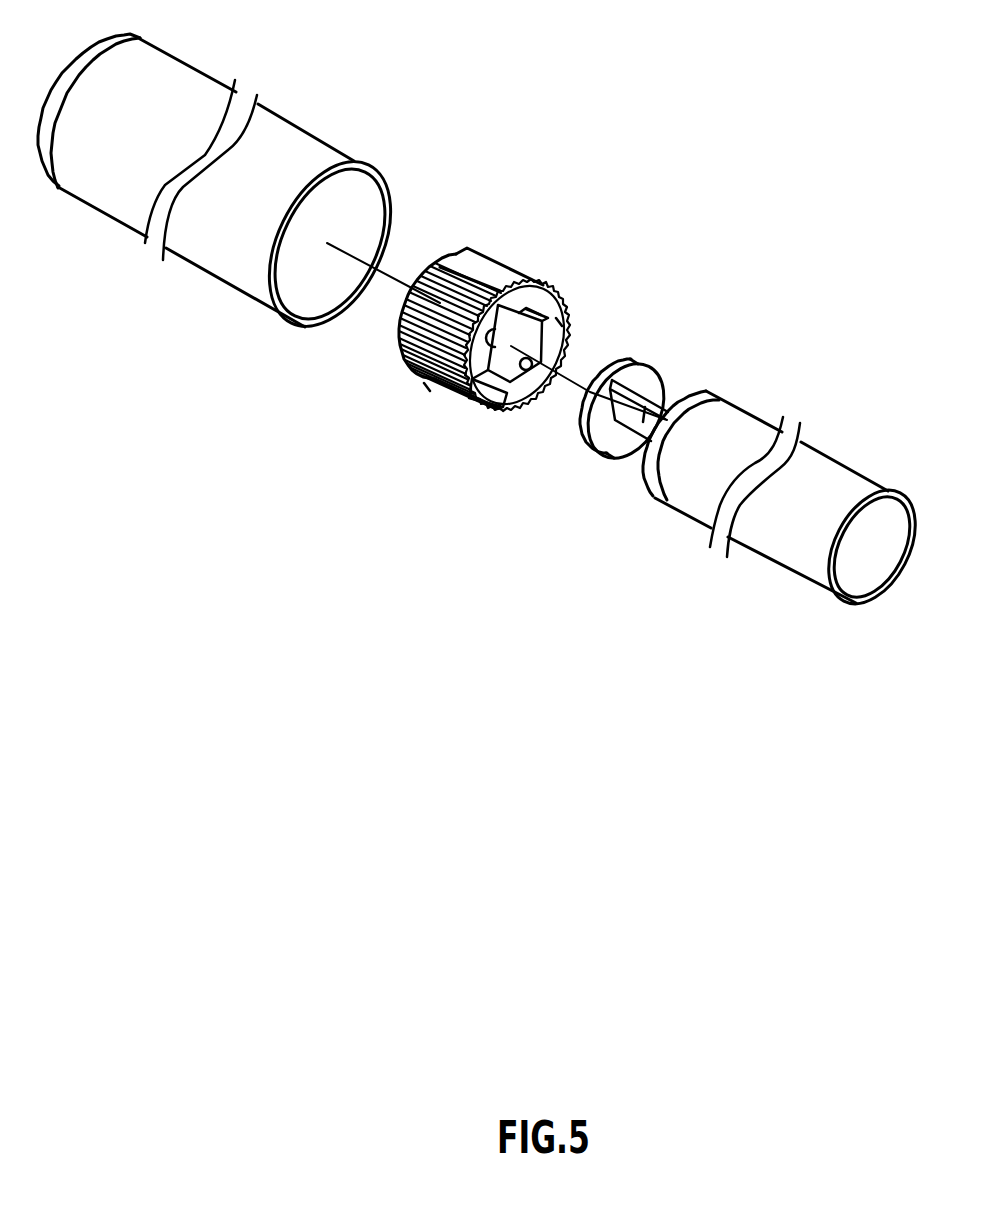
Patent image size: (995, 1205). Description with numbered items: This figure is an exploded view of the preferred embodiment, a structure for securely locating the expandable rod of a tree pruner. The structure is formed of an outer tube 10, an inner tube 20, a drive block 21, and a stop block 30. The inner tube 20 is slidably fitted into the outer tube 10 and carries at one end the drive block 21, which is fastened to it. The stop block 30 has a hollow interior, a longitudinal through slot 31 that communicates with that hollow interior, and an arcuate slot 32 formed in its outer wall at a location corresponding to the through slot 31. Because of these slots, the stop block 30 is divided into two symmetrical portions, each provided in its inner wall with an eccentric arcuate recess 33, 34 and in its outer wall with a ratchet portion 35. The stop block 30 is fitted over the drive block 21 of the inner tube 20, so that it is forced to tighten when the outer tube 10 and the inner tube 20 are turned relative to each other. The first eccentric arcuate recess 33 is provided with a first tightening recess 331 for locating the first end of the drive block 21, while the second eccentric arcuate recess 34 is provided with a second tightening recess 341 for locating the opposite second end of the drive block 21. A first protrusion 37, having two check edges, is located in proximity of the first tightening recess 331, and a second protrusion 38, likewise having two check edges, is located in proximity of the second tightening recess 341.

The outer tube 10 is at (331, 143).
The inner tube 20 is at (752, 420).
The drive block 21 is at (645, 422).
The stop block 30 is at (513, 342).
The longitudinal through slot 31 is at (513, 397).
The arcuate slot 32 is at (466, 272).
The first eccentric arcuate recess 33 is at (420, 283).
The first tightening recess 331 is at (467, 403).
The second eccentric arcuate recess 34 is at (523, 363).
The second tightening recess 341 is at (548, 318).
The ratchet portion 35 is at (427, 387).
The first protrusion 37 is at (492, 393).
The second protrusion 38 is at (527, 303).